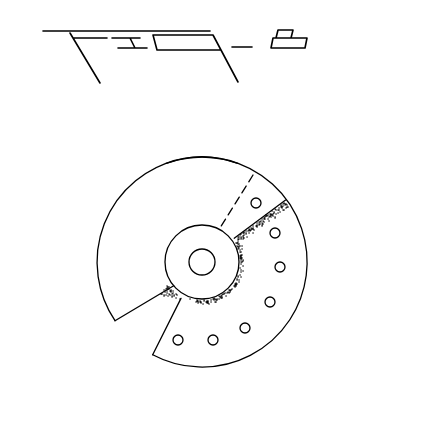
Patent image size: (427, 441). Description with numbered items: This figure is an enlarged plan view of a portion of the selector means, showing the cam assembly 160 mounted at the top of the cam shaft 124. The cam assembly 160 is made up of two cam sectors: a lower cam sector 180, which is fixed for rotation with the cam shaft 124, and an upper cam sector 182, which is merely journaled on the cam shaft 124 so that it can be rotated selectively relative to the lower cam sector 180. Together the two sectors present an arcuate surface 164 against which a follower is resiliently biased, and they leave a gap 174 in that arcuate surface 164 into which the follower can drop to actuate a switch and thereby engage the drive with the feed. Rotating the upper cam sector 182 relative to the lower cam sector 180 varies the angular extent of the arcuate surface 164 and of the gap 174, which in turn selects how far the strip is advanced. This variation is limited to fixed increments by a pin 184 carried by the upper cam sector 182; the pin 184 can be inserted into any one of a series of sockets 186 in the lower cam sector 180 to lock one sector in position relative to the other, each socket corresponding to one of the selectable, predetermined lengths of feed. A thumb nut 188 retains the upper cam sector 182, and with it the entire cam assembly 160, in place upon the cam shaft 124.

The cam shaft 124 is at (200, 249).
The cam assembly 160 is at (99, 215).
The arcuate surface 164 is at (187, 157).
The gap 174 is at (147, 305).
The lower cam sector 180 is at (185, 367).
The upper cam sector 182 is at (105, 273).
The pin 184 is at (261, 201).
The sockets 186 is at (250, 327).
The thumb nut 188 is at (178, 253).